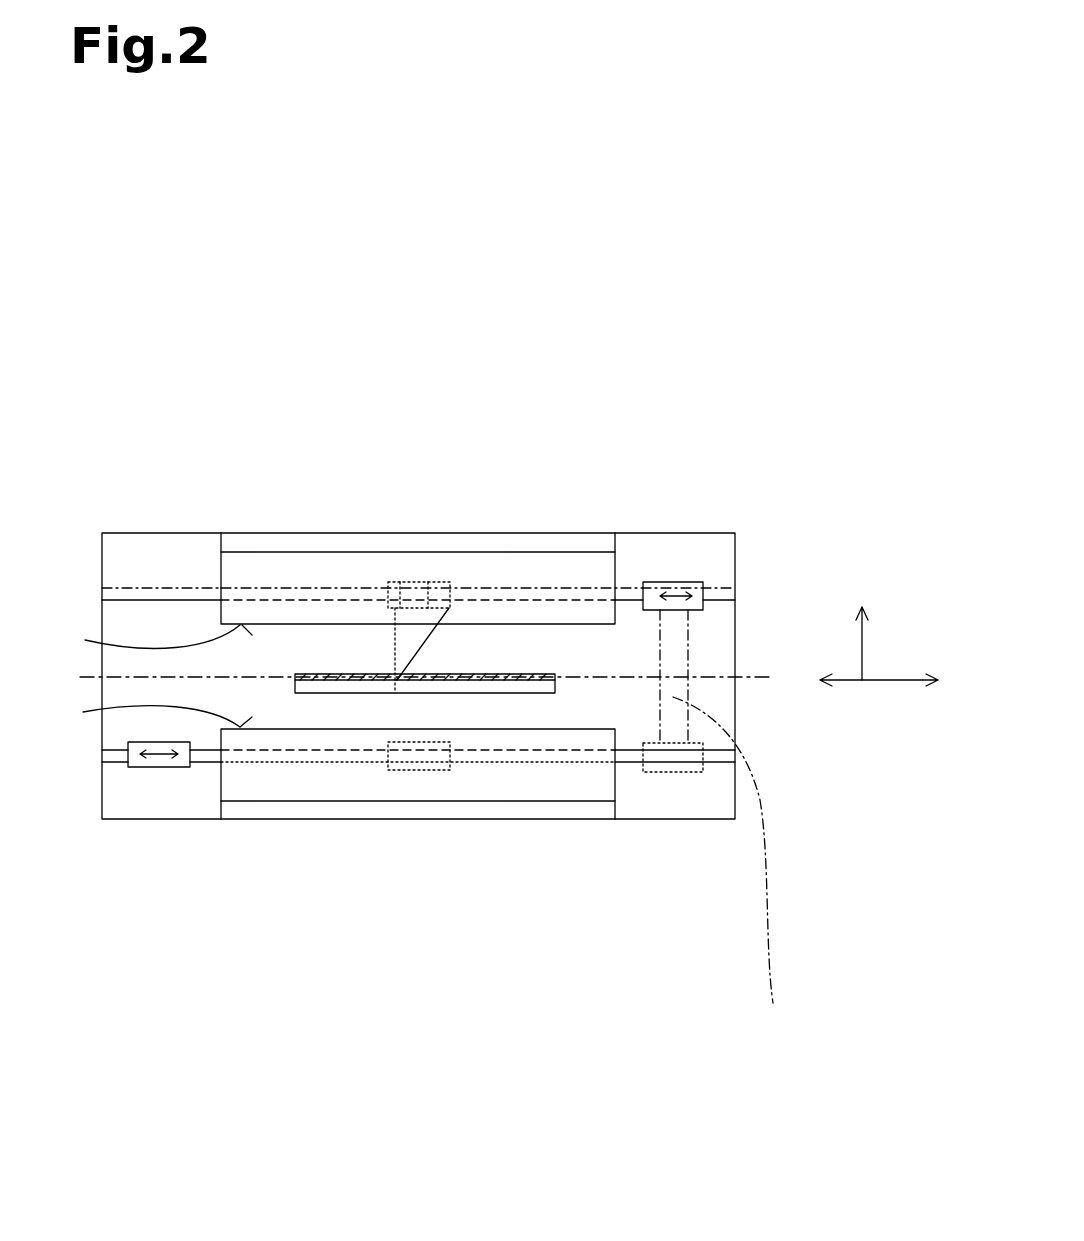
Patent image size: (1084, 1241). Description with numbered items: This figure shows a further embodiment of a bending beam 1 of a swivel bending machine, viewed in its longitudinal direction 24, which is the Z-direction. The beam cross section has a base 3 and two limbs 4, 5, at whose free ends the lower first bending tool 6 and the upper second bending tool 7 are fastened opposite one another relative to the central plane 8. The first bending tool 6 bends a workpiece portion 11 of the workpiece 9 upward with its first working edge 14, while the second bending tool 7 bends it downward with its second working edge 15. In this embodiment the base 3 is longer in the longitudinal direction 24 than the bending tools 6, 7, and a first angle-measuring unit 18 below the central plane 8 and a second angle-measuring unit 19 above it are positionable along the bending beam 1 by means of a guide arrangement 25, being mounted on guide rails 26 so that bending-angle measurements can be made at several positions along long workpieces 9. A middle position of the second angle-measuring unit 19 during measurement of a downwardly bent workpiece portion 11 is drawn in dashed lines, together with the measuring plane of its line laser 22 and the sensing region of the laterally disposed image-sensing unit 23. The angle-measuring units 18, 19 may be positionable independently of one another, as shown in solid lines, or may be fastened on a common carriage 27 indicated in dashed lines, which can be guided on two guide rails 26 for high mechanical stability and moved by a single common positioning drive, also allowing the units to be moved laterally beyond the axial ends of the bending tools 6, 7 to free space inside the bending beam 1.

The bending beam 1 is at (582, 345).
The base 3 is at (120, 617).
The limb 4 is at (250, 548).
The limb 5 is at (338, 812).
The first bending tool 6 is at (370, 793).
The second bending tool 7 is at (285, 565).
The central plane 8 is at (750, 678).
The workpiece 9 is at (537, 680).
The workpiece portion 11 is at (512, 685).
The first working edge 14 is at (149, 715).
The second working edge 15 is at (151, 638).
The first angle-measuring unit 18 is at (145, 767).
The second angle-measuring unit 19 is at (420, 582).
The line laser 22 is at (412, 595).
The image-sensing unit 23 is at (367, 692).
The longitudinal direction 24 is at (890, 682).
The guide arrangement 25 is at (720, 583).
The guide rails 26 is at (190, 595).
The common carriage 27 is at (738, 869).